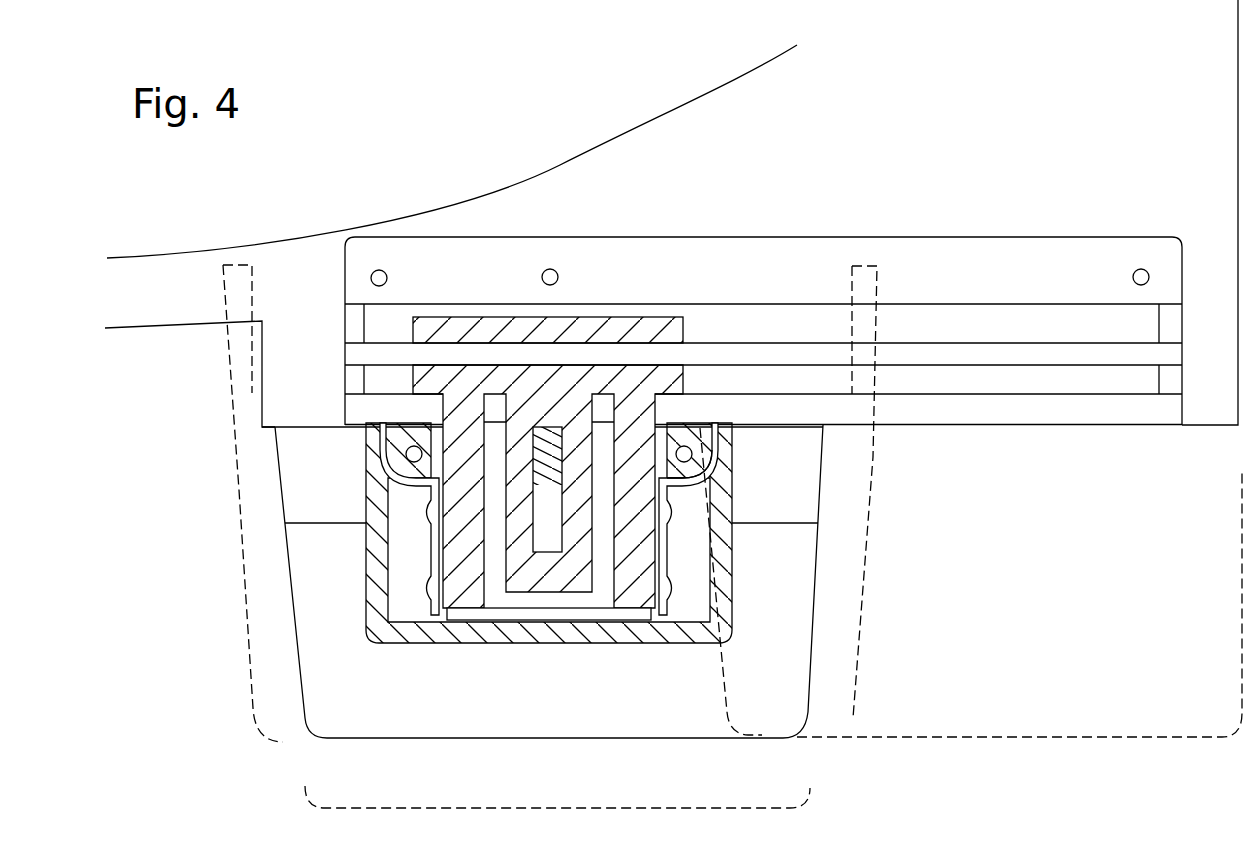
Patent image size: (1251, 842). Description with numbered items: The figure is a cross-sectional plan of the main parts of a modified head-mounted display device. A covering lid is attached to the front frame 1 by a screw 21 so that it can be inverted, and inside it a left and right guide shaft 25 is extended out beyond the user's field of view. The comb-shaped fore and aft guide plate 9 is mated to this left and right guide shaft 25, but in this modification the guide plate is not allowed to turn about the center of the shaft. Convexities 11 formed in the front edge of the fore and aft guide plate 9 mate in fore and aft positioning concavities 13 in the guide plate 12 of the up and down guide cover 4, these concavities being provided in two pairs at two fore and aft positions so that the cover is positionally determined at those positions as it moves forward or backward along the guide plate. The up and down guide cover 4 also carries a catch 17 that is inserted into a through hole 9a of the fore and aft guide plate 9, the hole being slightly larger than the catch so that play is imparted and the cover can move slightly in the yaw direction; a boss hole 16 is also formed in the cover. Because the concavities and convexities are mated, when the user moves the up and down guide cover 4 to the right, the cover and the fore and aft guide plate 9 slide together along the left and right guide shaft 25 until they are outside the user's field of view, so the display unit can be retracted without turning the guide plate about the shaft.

The front frame 1 is at (753, 98).
The up and down guide cover 4 is at (732, 567).
The fore and aft guide plate 9 is at (638, 330).
The through hole 9a is at (542, 521).
The convexities 11 is at (462, 617).
The guide plate 12 is at (430, 556).
The fore and aft positioning concavities 13 is at (428, 522).
The boss hole 16 is at (406, 456).
The catch 17 is at (667, 481).
The screw 21 is at (1141, 268).
The left and right guide shaft 25 is at (978, 357).